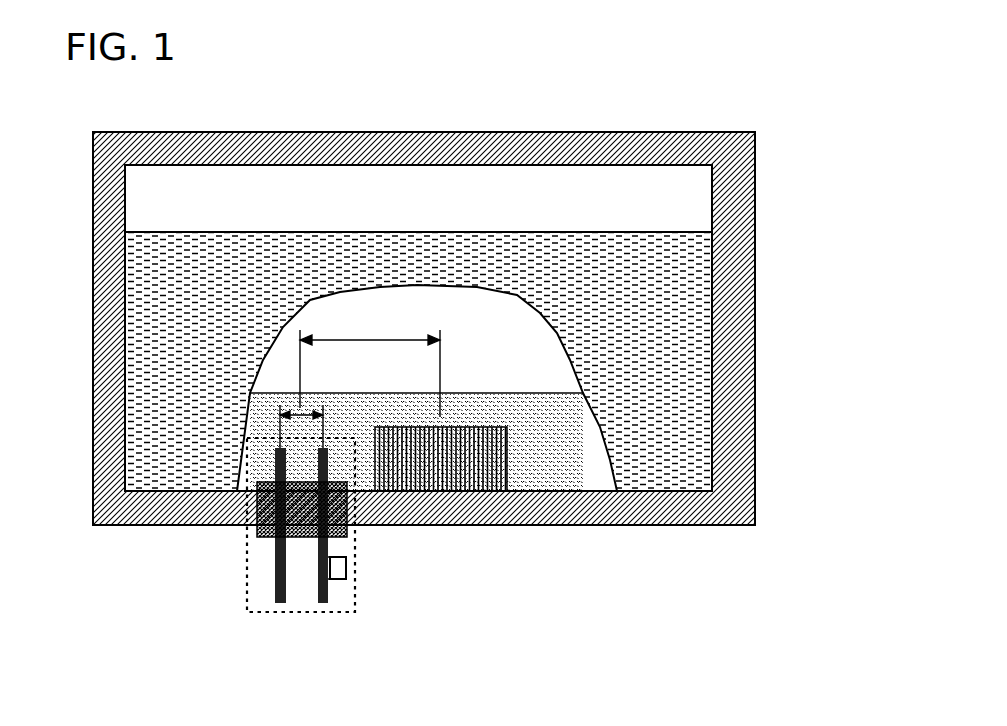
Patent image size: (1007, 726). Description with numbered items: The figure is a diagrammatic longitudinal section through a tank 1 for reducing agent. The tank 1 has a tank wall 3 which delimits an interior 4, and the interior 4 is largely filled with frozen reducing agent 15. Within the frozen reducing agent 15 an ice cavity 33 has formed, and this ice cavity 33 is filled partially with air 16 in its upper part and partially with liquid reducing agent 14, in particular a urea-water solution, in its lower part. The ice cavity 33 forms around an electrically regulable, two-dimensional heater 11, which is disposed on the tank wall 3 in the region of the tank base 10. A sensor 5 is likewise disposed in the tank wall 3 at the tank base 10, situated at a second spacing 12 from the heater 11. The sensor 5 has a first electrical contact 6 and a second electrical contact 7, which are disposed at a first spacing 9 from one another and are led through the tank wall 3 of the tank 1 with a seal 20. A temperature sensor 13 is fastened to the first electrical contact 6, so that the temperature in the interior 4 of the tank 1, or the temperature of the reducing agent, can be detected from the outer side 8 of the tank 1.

The tank 1 is at (768, 110).
The tank wall 3 is at (617, 512).
The interior 4 is at (472, 187).
The sensor 5 is at (302, 550).
The first electrical contact 6 is at (330, 540).
The second electrical contact 7 is at (277, 587).
The outer side 8 is at (503, 540).
The first spacing 9 is at (298, 400).
The tank base 10 is at (148, 527).
The heater 11 is at (460, 427).
The second spacing 12 is at (373, 338).
The temperature sensor 13 is at (346, 568).
The liquid reducing agent 14 is at (545, 458).
The frozen reducing agent 15 is at (695, 250).
The air 16 is at (475, 315).
The seal 20 is at (253, 538).
The ice cavity 33 is at (507, 315).